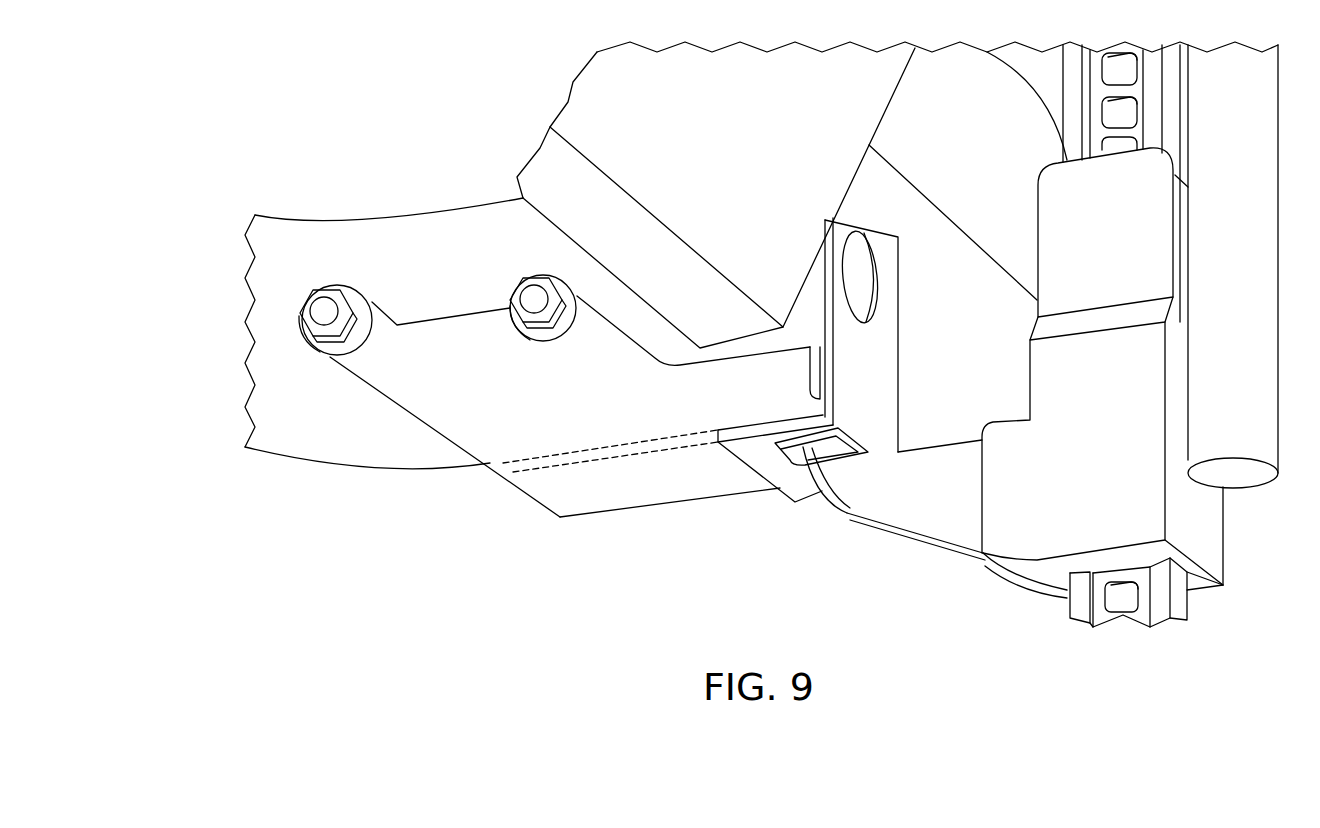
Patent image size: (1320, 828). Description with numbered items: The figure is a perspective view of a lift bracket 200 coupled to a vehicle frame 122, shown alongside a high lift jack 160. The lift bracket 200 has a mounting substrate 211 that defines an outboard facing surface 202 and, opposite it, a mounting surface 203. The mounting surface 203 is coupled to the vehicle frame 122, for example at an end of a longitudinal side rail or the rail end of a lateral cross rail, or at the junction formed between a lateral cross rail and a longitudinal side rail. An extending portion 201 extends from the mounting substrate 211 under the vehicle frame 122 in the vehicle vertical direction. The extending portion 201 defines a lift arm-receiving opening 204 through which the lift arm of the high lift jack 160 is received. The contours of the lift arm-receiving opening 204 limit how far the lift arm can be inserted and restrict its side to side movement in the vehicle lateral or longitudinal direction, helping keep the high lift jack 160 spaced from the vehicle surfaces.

The vehicle frame 122 is at (213, 352).
The high lift jack 160 is at (1160, 425).
The lift bracket 200 is at (898, 452).
The extending portion 201 is at (718, 468).
The outboard facing surface 202 is at (880, 394).
The mounting surface 203 is at (822, 286).
The lift arm-receiving opening 204 is at (824, 450).
The mounting substrate 211 is at (903, 268).